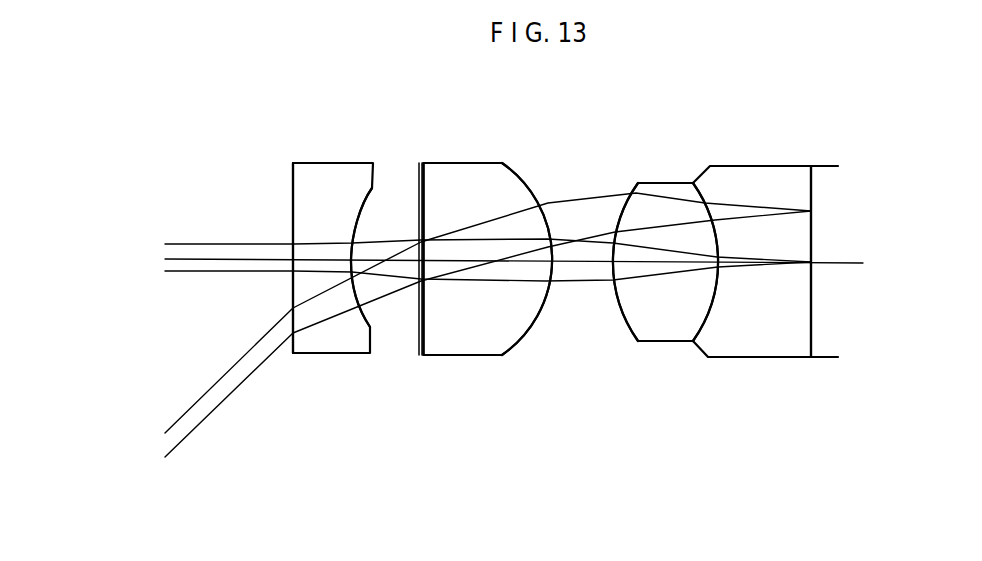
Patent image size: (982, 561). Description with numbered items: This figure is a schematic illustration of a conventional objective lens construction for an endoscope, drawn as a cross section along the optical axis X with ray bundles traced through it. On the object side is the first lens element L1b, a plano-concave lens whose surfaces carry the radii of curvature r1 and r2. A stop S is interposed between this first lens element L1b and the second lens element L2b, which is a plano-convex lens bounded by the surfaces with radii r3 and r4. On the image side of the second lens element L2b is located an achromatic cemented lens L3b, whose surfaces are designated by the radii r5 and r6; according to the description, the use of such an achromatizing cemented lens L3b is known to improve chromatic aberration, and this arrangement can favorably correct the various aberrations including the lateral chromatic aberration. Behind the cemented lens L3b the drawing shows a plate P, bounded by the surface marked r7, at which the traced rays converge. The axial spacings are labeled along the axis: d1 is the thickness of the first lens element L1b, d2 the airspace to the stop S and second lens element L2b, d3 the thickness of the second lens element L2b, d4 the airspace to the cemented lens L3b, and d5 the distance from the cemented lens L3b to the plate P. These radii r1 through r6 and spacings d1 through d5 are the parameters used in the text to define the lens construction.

The first lens element L1b is at (333, 162).
The stop S is at (418, 163).
The second lens element L2b is at (458, 162).
The achromatic cemented lens L3b is at (703, 172).
The plane parallel plate / image plane P is at (823, 166).
The optical axis X is at (845, 263).
The lens thickness or airspace d1 is at (313, 260).
The lens thickness or airspace d2 is at (380, 260).
The lens thickness or airspace d3 is at (447, 260).
The lens thickness or airspace d4 is at (572, 265).
The lens thickness or airspace d5 is at (737, 267).
The radius of curvature r1 is at (292, 351).
The radius of curvature r2 is at (377, 320).
The radius of curvature r3 is at (418, 345).
The radius of curvature r4 is at (513, 340).
The radius of curvature r5 is at (628, 330).
The radius of curvature r6 is at (703, 335).
The seventh surface (plate) r7 is at (812, 345).